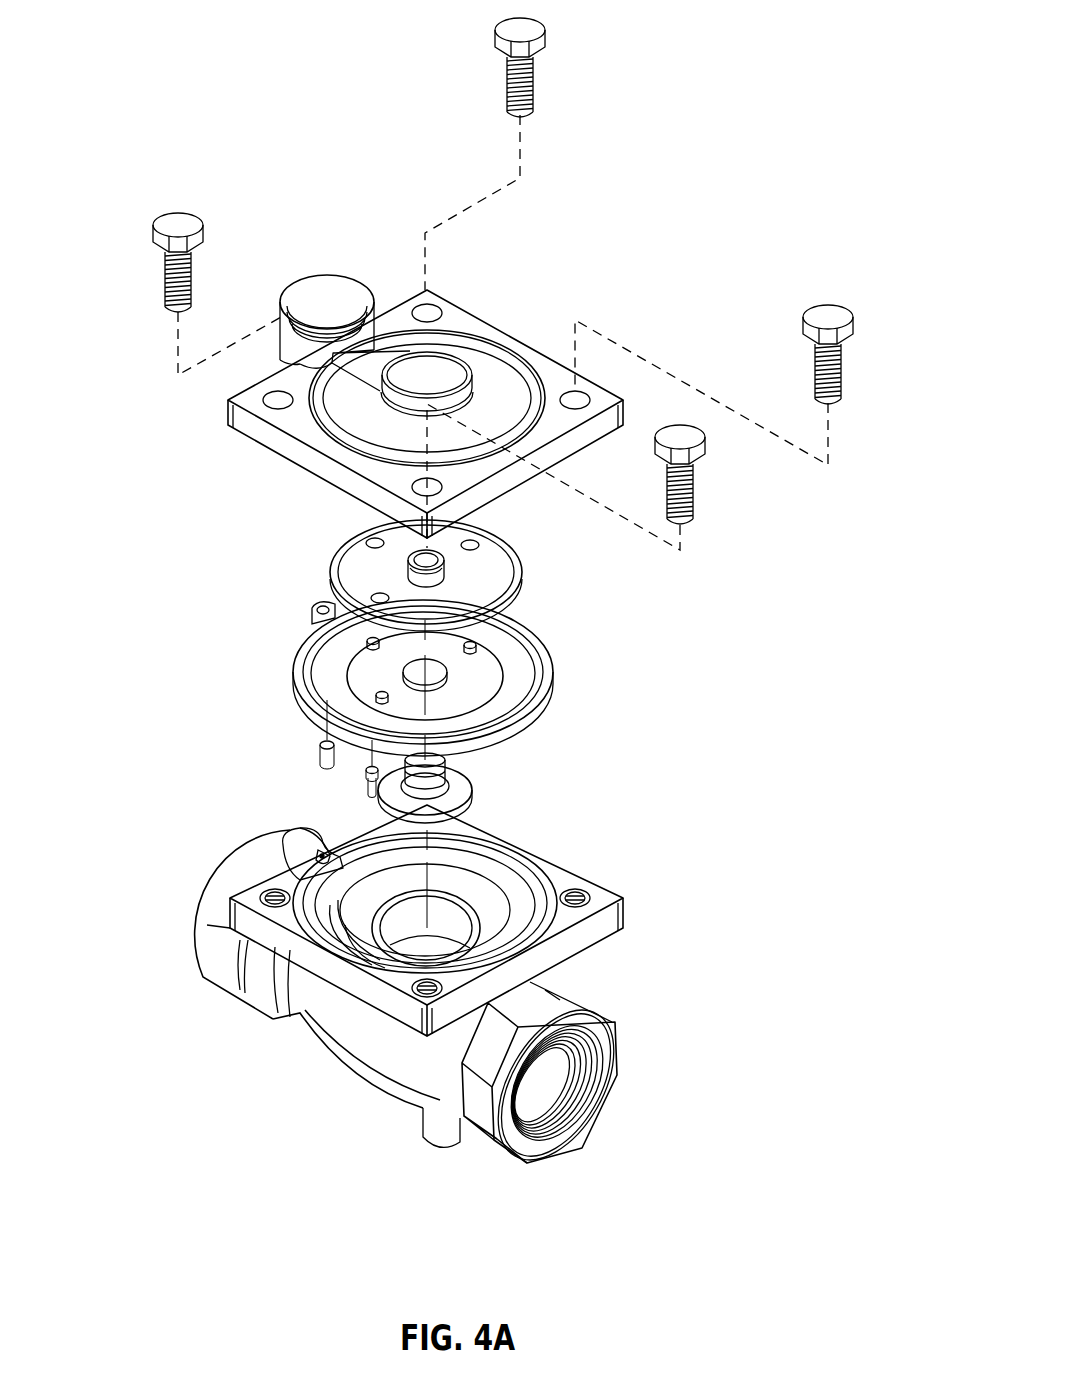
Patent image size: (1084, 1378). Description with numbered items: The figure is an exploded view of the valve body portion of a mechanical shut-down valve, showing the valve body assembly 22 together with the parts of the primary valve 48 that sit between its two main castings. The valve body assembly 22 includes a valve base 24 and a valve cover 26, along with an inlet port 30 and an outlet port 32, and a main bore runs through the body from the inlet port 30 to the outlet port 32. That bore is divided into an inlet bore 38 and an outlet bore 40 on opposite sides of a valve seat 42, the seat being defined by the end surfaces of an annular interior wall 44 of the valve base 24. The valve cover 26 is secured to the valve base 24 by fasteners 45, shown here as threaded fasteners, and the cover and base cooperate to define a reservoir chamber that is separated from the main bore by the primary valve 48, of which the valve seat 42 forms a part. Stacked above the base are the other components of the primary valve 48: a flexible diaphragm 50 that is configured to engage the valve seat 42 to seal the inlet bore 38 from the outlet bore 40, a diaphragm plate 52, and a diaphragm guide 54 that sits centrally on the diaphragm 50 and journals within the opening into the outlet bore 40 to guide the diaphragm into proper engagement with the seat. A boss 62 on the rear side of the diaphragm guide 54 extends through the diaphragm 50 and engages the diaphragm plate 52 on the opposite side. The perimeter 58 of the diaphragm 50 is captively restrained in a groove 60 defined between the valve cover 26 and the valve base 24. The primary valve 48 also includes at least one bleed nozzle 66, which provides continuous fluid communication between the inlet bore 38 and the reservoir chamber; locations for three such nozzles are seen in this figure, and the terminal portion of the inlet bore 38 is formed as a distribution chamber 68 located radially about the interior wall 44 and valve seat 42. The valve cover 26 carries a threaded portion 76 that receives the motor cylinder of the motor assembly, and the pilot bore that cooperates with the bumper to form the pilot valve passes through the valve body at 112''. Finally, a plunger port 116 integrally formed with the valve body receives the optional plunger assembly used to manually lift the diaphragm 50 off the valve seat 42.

The valve body assembly 22 is at (705, 197).
The valve base 24 is at (343, 1058).
The valve cover 26 is at (494, 312).
The inlet port 30 is at (562, 1107).
The outlet port 32 is at (205, 897).
The inlet bore 38 is at (500, 900).
The outlet bore 40 is at (445, 915).
The valve seat 42 is at (480, 932).
The annular interior wall 44 is at (490, 955).
The fasteners 45 is at (535, 30).
The primary valve 48 is at (617, 577).
The flexible diaphragm 50 is at (520, 660).
The diaphragm plate 52 is at (522, 567).
The diaphragm guide 54 is at (470, 782).
The perimeter of the diaphragm 58 is at (548, 693).
The groove 60 is at (500, 836).
The boss 62 is at (450, 756).
The bleed nozzle 66 is at (325, 762).
The distribution chamber 68 is at (335, 895).
The threaded portion of the valve cover 76 is at (305, 298).
The pilot bore 112'' is at (266, 831).
The plunger port 116 is at (428, 1125).